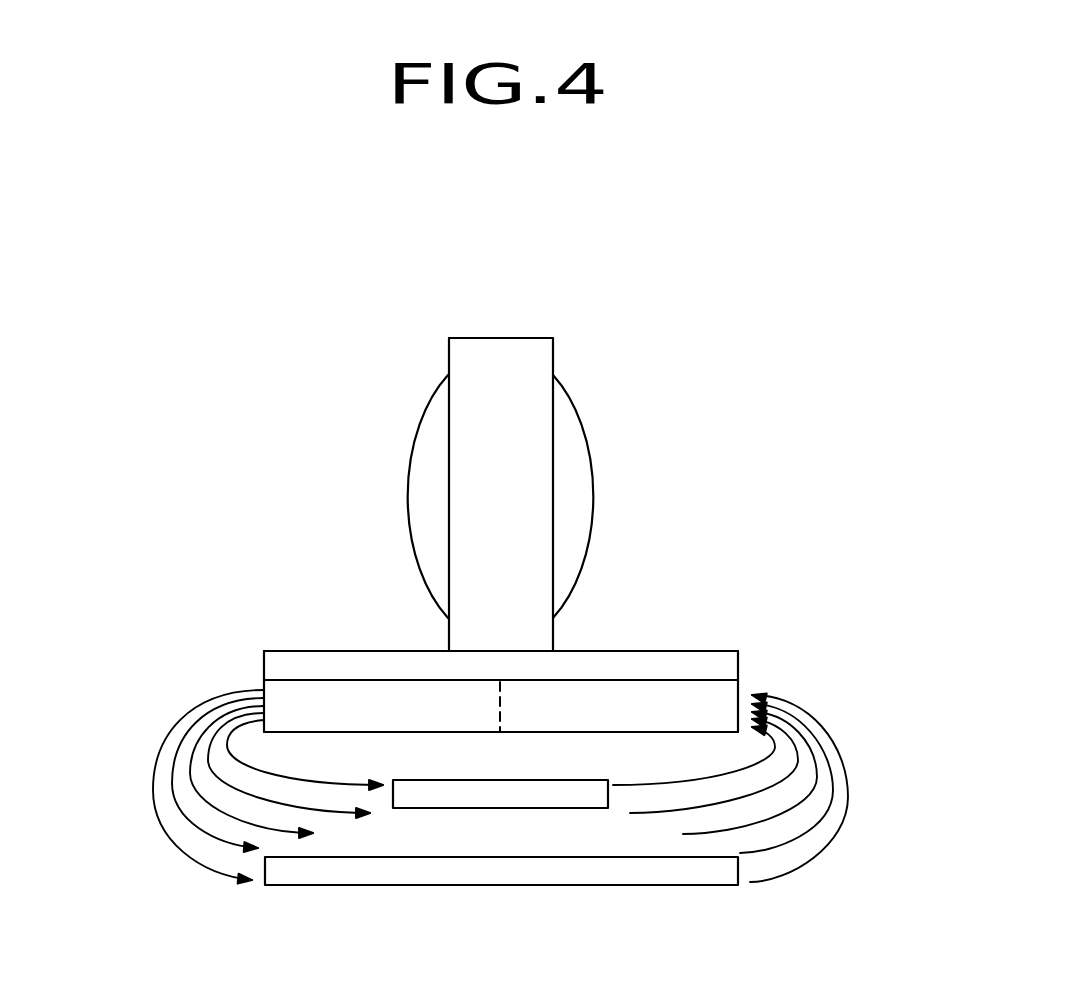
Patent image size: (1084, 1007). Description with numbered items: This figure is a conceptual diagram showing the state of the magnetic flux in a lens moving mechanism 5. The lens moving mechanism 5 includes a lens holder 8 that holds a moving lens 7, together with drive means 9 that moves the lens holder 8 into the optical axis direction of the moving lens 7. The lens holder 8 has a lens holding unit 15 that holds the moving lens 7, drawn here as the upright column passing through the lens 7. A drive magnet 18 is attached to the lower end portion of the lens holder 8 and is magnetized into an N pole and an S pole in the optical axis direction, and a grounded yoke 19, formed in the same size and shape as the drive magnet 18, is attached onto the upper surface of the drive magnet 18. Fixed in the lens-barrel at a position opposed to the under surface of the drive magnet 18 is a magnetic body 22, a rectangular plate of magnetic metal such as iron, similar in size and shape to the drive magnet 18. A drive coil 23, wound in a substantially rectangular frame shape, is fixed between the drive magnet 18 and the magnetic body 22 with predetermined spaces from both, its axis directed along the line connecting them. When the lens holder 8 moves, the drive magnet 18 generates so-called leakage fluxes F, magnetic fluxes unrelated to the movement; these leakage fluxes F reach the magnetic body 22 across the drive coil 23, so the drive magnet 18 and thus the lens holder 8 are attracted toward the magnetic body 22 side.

The lens moving mechanism 5 is at (731, 363).
The moving lens 7 is at (418, 488).
The lens holder 8 is at (487, 338).
The drive means 9 is at (815, 706).
The lens holding unit 15 is at (533, 352).
The drive magnet 18 is at (722, 717).
The grounded yoke 19 is at (677, 660).
The magnetic body 22 is at (367, 872).
The drive coil 23 is at (560, 795).
The leakage fluxes F is at (190, 766).